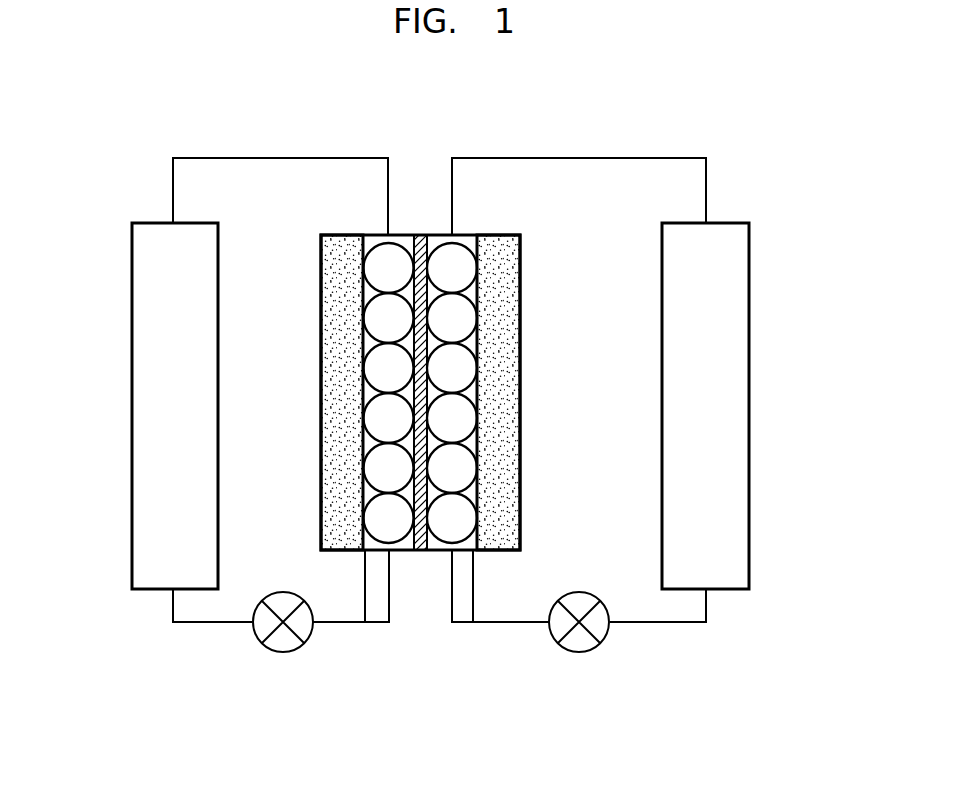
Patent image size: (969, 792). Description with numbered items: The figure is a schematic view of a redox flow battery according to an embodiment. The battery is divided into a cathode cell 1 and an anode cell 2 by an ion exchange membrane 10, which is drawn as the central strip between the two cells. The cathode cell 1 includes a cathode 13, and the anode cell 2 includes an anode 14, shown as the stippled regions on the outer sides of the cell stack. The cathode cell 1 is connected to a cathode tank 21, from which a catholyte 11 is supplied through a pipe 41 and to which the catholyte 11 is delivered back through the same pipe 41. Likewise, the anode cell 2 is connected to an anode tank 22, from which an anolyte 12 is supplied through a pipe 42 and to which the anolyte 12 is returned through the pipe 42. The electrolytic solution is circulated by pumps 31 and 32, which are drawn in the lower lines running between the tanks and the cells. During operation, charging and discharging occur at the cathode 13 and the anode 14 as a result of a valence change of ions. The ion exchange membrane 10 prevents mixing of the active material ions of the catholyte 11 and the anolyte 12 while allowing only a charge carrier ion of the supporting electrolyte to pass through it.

The cathode cell 1 is at (320, 277).
The anode cell 2 is at (524, 277).
The ion exchange membrane 10 is at (423, 235).
The catholyte 11 is at (380, 552).
The anolyte 12 is at (460, 552).
The cathode 13 is at (340, 493).
The anode 14 is at (502, 494).
The cathode tank 21 is at (138, 295).
The anode tank 22 is at (743, 296).
The pump 31 is at (283, 653).
The pump 32 is at (579, 653).
The pipe 41 is at (288, 158).
The pipe 42 is at (578, 158).